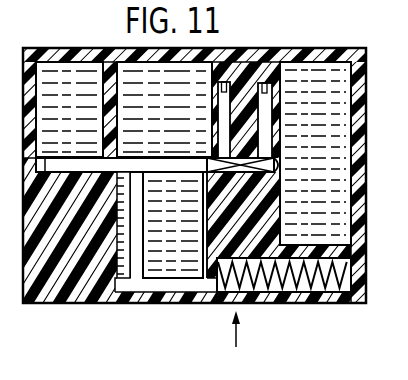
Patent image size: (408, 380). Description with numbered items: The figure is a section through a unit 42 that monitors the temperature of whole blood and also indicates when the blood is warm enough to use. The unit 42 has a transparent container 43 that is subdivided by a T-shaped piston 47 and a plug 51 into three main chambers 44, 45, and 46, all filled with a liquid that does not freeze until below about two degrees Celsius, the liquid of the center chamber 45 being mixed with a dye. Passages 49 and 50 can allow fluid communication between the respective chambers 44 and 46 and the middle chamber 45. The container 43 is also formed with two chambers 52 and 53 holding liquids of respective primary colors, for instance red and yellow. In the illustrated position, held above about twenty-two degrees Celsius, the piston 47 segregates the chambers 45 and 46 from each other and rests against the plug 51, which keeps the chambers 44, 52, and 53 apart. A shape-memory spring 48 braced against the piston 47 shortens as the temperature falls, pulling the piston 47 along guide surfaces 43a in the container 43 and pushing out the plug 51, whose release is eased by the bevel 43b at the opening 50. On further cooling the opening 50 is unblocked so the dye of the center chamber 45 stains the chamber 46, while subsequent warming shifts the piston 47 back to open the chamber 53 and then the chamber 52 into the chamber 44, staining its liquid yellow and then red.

The unit 42 is at (242, 340).
The transparent container 43 is at (33, 215).
The guide surfaces 43a is at (114, 292).
The bevel 43b is at (278, 172).
The chamber 44 is at (336, 150).
The center chamber 45 is at (127, 88).
The chamber 46 is at (75, 82).
The T-shaped piston 47 is at (182, 287).
The spring 48 is at (261, 280).
The passage 49 is at (276, 166).
The passage 50 is at (116, 186).
The plug 51 is at (258, 166).
The chamber 52 is at (228, 82).
The chamber 53 is at (238, 87).